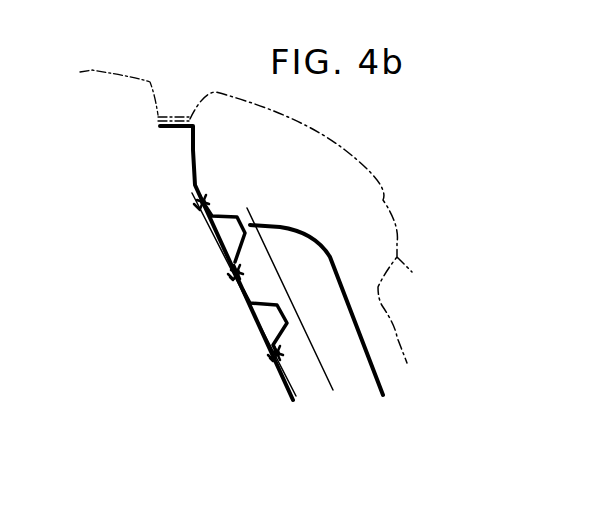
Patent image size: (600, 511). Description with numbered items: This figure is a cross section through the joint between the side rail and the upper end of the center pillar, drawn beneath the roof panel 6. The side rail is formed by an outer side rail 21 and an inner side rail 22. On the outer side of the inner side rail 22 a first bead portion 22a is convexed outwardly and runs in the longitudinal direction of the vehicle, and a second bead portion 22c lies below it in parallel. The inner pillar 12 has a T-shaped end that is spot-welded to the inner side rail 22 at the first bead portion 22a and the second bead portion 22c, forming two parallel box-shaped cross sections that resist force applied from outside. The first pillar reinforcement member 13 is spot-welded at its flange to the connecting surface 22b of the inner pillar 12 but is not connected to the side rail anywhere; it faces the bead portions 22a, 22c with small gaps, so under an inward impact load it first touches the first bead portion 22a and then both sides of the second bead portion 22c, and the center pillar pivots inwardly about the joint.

The roof panel 6 is at (92, 70).
The outer side rail 21 is at (383, 200).
The first pillar reinforcement member 13 is at (367, 342).
The inner pillar 12 is at (252, 310).
The inner side rail 22 is at (195, 178).
The first bead portion 22a is at (244, 236).
The connecting surface 22b is at (277, 352).
The second bead portion 22c is at (286, 320).